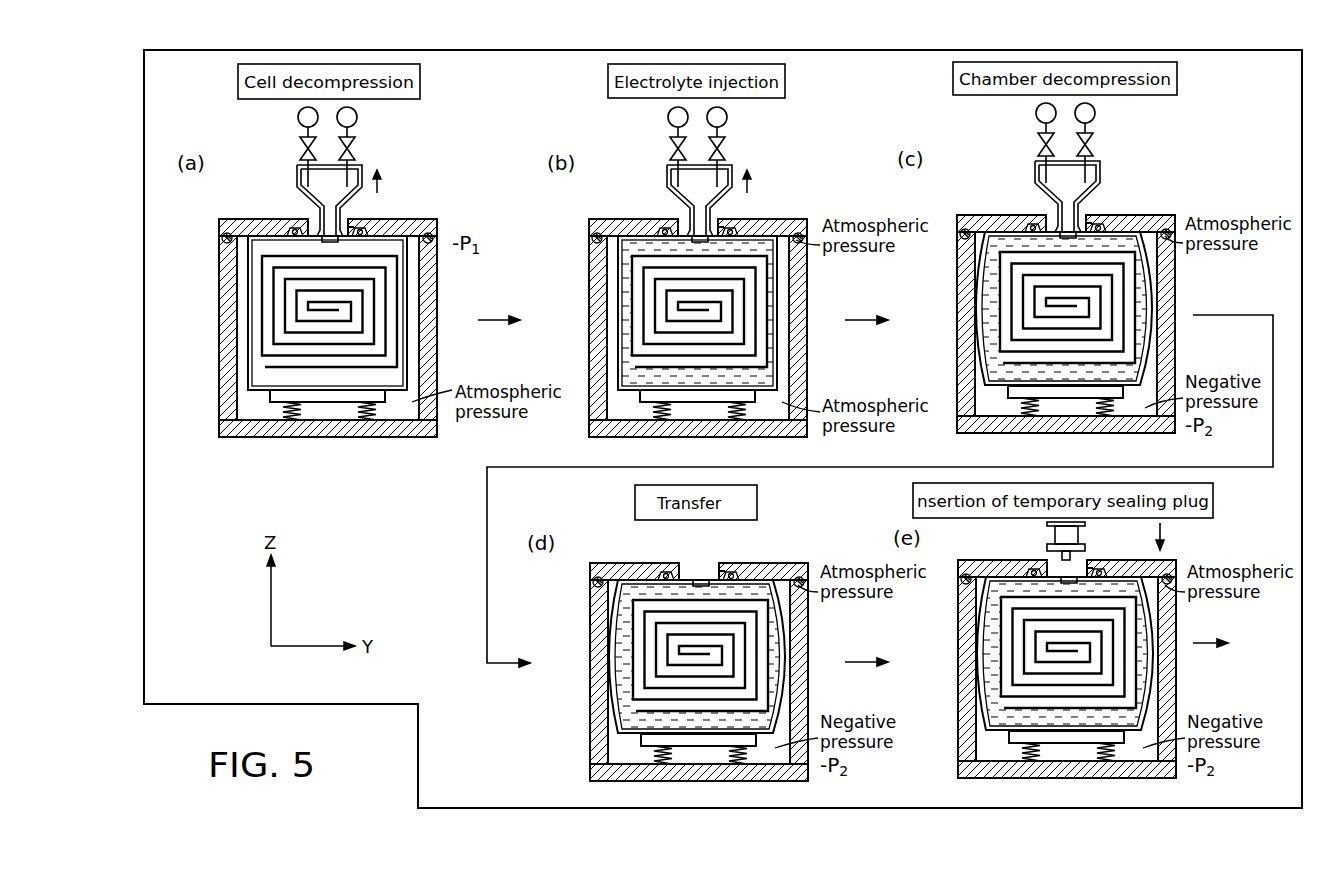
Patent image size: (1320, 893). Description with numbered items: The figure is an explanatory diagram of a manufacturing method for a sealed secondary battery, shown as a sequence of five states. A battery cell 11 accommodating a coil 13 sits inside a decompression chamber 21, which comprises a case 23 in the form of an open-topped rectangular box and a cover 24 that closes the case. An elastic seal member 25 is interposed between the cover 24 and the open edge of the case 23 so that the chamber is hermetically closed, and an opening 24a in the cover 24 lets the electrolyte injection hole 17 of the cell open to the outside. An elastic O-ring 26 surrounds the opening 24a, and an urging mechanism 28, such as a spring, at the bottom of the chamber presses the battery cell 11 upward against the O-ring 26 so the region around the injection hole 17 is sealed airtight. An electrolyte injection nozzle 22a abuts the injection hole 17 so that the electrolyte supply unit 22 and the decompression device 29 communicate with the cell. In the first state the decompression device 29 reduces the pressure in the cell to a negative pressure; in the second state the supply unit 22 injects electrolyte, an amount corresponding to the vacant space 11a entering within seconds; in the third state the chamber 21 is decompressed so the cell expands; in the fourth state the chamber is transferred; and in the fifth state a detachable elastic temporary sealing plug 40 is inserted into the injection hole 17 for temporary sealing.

The battery cell 11 is at (250, 330).
The vacant space 11a is at (398, 368).
The coil 13 is at (269, 373).
The electrolyte injection hole 17 is at (330, 236).
The decompression chamber 21 is at (222, 356).
The electrolyte supply unit 22 is at (357, 118).
The electrolyte injection nozzle 22a is at (318, 218).
The case 23 is at (226, 279).
The cover 24 is at (228, 219).
The opening 24a is at (352, 221).
The elastic seal member 25 is at (222, 240).
The O-ring 26 is at (290, 228).
The urging mechanism 28 is at (378, 410).
The decompression device 29 is at (297, 118).
The temporary sealing plug 40 is at (1052, 546).